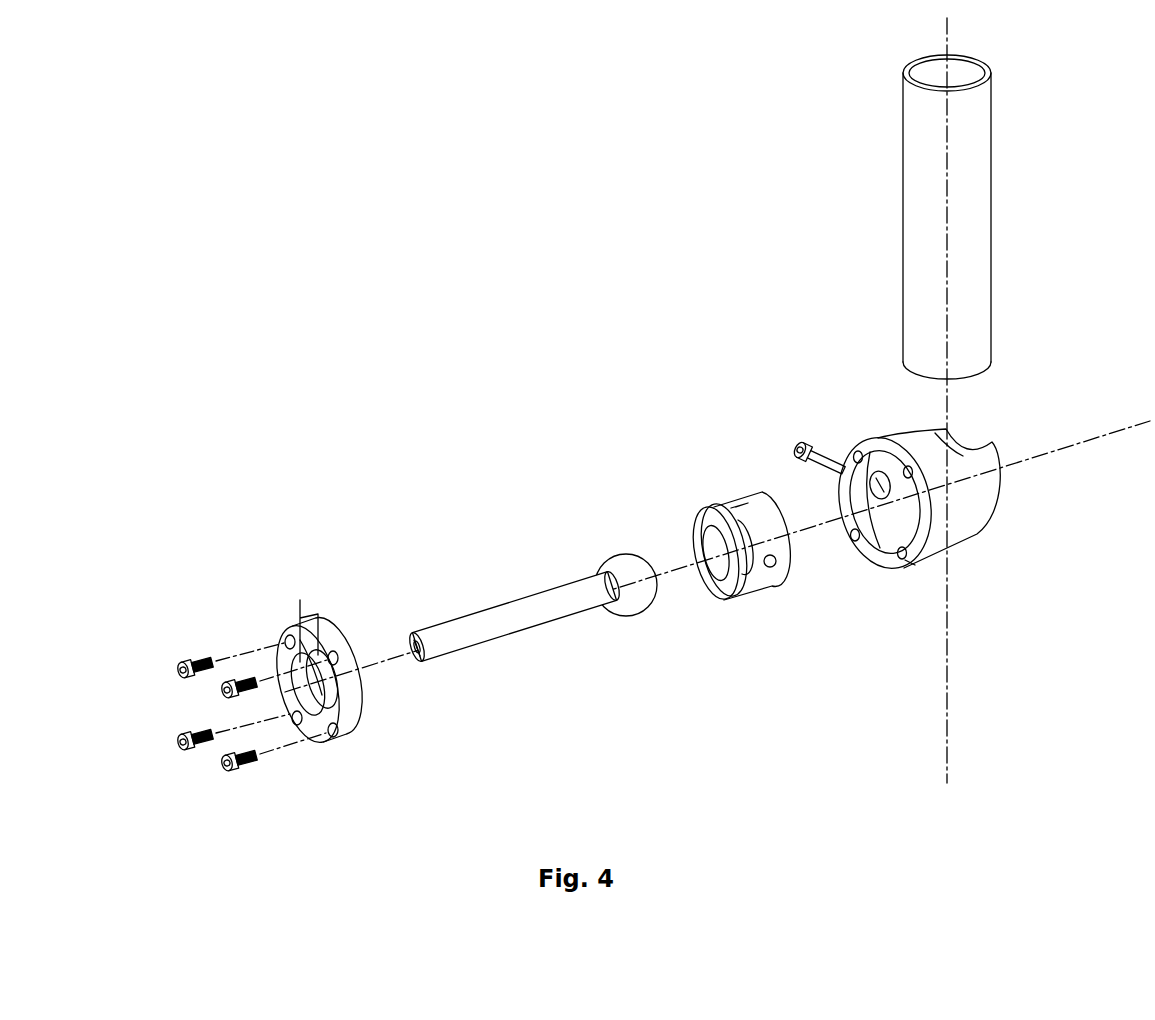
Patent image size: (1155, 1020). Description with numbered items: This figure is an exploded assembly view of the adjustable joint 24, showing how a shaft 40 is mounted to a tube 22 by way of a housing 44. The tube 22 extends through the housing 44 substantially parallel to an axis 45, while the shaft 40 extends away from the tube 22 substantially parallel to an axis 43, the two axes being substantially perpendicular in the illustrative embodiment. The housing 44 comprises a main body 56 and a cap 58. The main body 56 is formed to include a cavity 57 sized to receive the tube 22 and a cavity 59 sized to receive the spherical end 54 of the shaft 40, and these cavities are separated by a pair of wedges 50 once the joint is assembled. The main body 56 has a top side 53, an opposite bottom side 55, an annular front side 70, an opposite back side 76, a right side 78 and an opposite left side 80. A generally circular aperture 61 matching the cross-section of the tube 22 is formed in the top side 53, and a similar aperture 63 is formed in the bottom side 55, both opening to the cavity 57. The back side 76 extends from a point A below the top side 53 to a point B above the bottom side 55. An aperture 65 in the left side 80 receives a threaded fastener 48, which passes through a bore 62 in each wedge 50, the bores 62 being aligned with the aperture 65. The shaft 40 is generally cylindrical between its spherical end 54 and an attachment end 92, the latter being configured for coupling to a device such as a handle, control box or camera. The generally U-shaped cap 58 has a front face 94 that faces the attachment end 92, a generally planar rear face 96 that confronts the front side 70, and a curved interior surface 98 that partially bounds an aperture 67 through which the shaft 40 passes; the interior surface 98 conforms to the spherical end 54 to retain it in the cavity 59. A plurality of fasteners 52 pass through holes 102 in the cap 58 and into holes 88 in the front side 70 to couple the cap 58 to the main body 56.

The tube 22 is at (978, 150).
The adjustable joint 24 is at (608, 447).
The shaft 40 is at (465, 608).
The axis 43 is at (1150, 421).
The housing 44 is at (283, 492).
The axis 45 is at (948, 703).
The fastener 48 is at (797, 442).
The wedges 50 is at (722, 598).
The fasteners 52 is at (220, 692).
The top side 53 is at (885, 437).
The spherical end 54 is at (625, 573).
The bottom side 55 is at (900, 573).
The main body 56 is at (892, 632).
The cavity 57 is at (977, 450).
The cap 58 is at (300, 568).
The cavity 59 is at (855, 543).
The aperture 61 is at (957, 440).
The bore 62 is at (773, 565).
The aperture 63 is at (955, 545).
The aperture 65 is at (878, 476).
The aperture 67 is at (302, 618).
The front side 70 is at (842, 487).
The back side 76 is at (998, 460).
The right side 78 is at (985, 496).
The left side 80 is at (897, 440).
The holes 88 is at (897, 560).
The attachment end 92 is at (412, 667).
The front face 94 is at (316, 740).
The rear face 96 is at (348, 628).
The interior surface 98 is at (308, 700).
The holes 102 is at (360, 705).
The point A is at (995, 452).
The point B is at (990, 525).